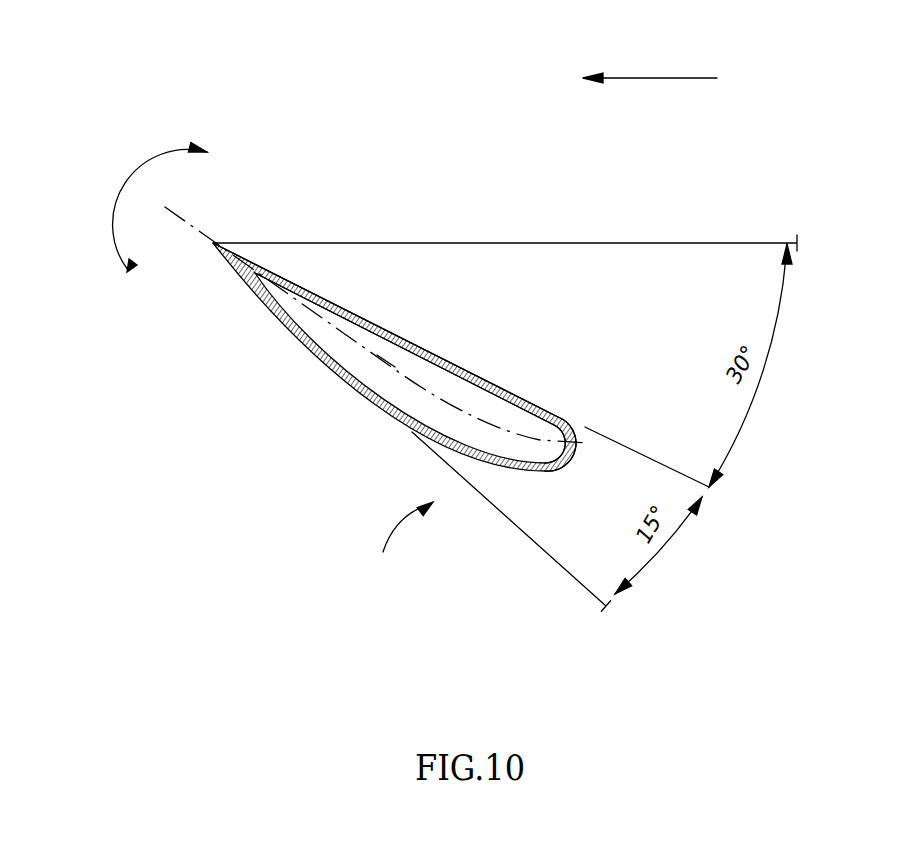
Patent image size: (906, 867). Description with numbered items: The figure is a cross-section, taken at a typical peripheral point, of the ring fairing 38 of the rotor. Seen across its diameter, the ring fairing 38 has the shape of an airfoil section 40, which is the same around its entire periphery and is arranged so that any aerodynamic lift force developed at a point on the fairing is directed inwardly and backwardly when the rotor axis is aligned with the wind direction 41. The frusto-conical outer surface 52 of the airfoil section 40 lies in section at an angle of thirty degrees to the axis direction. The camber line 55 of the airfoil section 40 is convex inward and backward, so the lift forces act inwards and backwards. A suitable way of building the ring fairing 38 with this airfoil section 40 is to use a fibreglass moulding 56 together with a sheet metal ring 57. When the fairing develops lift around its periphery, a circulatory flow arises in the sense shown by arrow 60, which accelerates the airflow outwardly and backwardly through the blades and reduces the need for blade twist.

The ring fairing 38 is at (397, 541).
The airfoil section 40 is at (292, 335).
The wind direction 41 is at (647, 78).
The frusto-conical outer surface 52 is at (325, 299).
The camber line 55 is at (387, 365).
The fibreglass moulding 56 is at (526, 472).
The sheet metal ring 57 is at (455, 365).
The arrow 60 is at (133, 171).